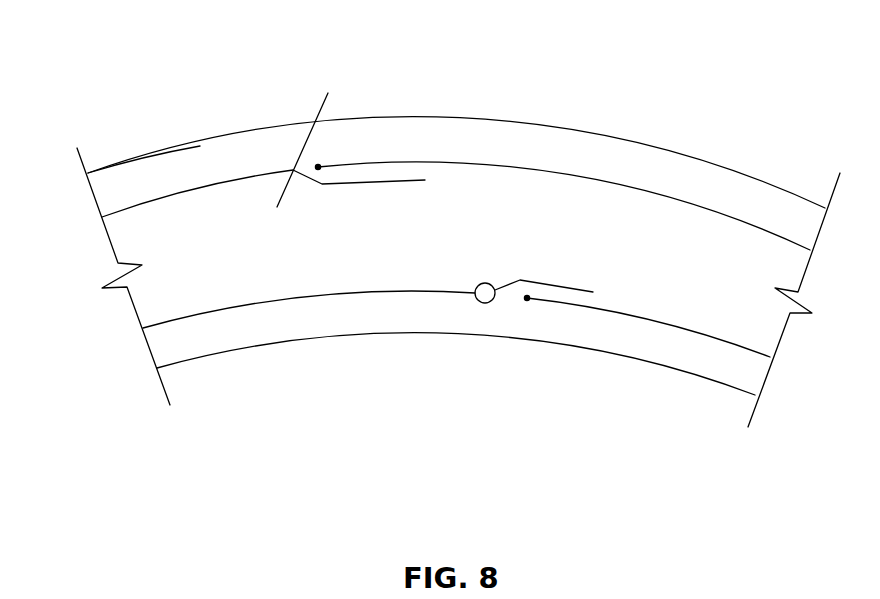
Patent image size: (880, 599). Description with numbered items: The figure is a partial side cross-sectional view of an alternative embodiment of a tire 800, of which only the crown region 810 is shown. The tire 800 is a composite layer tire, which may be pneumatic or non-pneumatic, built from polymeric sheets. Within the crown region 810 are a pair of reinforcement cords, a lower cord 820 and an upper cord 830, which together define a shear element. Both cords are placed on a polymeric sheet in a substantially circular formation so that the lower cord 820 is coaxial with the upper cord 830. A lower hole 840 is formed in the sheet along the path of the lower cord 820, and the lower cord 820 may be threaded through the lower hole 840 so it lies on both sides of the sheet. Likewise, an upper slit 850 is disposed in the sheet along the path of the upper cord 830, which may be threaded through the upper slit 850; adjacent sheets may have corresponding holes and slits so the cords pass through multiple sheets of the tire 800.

The tire 800 is at (135, 40).
The crown region 810 is at (720, 187).
The lower cord 820 is at (173, 318).
The upper cord 830 is at (137, 202).
The lower hole 840 is at (485, 303).
The upper slit 850 is at (302, 150).